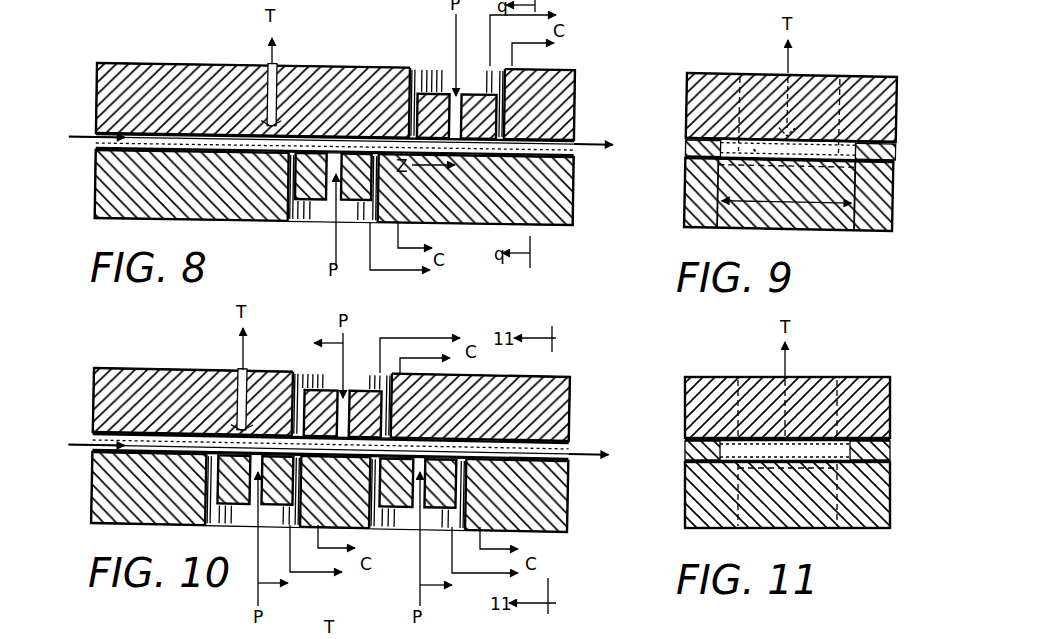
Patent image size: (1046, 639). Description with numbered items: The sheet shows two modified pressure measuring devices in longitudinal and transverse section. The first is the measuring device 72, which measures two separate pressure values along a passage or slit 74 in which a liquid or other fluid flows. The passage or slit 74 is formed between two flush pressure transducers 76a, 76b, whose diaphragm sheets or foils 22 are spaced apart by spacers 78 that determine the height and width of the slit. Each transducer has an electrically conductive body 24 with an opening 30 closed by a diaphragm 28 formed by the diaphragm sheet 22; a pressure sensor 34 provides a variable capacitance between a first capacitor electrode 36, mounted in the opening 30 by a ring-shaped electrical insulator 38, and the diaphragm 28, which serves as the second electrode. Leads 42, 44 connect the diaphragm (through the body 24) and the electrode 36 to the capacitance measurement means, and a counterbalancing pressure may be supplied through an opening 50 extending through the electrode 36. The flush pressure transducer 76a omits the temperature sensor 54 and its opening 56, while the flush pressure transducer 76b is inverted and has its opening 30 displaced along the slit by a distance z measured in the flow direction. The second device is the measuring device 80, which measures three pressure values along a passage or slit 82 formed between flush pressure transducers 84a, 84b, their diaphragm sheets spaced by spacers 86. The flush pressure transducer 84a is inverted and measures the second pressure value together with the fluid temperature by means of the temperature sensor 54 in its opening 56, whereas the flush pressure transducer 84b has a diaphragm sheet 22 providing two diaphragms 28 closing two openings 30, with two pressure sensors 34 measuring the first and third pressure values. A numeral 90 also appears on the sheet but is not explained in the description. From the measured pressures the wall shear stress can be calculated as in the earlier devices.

In FIG. 8, the diaphragm sheet 22 is at (160, 136).
In FIG. 9, the diaphragm sheet 22 is at (893, 120).
In FIG. 10, the diaphragm sheet 22 is at (568, 441).
In FIG. 8, the body 24 is at (572, 102).
In FIG. 10, the body 24 is at (570, 390).
In FIG. 8, the diaphragm 28 is at (298, 140).
In FIG. 10, the diaphragm 28 is at (298, 378).
In FIG. 8, the opening 30 is at (420, 90).
In FIG. 9, the opening 30 is at (838, 78).
In FIG. 10, the opening 30 is at (306, 392).
In FIG. 11, the opening 30 is at (787, 453).
In FIG. 8, the pressure sensor 34 is at (305, 212).
In FIG. 10, the pressure sensor 34 is at (360, 392).
In FIG. 8, the first capacitor electrode 36 is at (440, 90).
In FIG. 10, the first capacitor electrode 36 is at (372, 390).
In FIG. 8, the electrical insulator 38 is at (410, 100).
In FIG. 10, the electrical insulator 38 is at (297, 400).
In FIG. 8, the lead 42 is at (540, 50).
In FIG. 10, the lead 42 is at (455, 362).
In FIG. 8, the lead 44 is at (492, 22).
In FIG. 10, the lead 44 is at (440, 338).
In FIG. 8, the opening 50 is at (475, 92).
In FIG. 10, the opening 50 is at (392, 411).
In FIG. 8, the temperature sensor 54 is at (262, 120).
In FIG. 9, the temperature sensor 54 is at (796, 130).
In FIG. 10, the temperature sensor 54 is at (232, 425).
In FIG. 8, the temperature sensor opening 56 is at (268, 76).
In FIG. 10, the temperature sensor opening 56 is at (239, 378).
In FIG. 8, the measuring device 72 is at (100, 48).
In FIG. 9, the measuring device 72 is at (906, 64).
In FIG. 8, the passage or slit 74 is at (126, 136).
In FIG. 9, the passage or slit 74 is at (756, 150).
In FIG. 8, the flush pressure transducer 76a is at (95, 204).
In FIG. 9, the flush pressure transducer 76a is at (683, 168).
In FIG. 8, the flush pressure transducer 76b is at (95, 80).
In FIG. 9, the flush pressure transducer 76b is at (683, 86).
In FIG. 9, the spacers 78 is at (688, 148).
In FIG. 10, the measuring device 80 is at (98, 353).
In FIG. 10, the passage or slit 82 is at (126, 440).
In FIG. 11, the passage or slit 82 is at (862, 428).
In FIG. 10, the flush pressure transducer 84a is at (91, 395).
In FIG. 11, the flush pressure transducer 84a is at (787, 407).
In FIG. 10, the flush pressure transducer 84b is at (91, 505).
In FIG. 11, the flush pressure transducer 84b is at (787, 495).
In FIG. 11, the spacers 86 is at (685, 452).
In FIG. 10, the mold assembly 90 is at (73, 638).